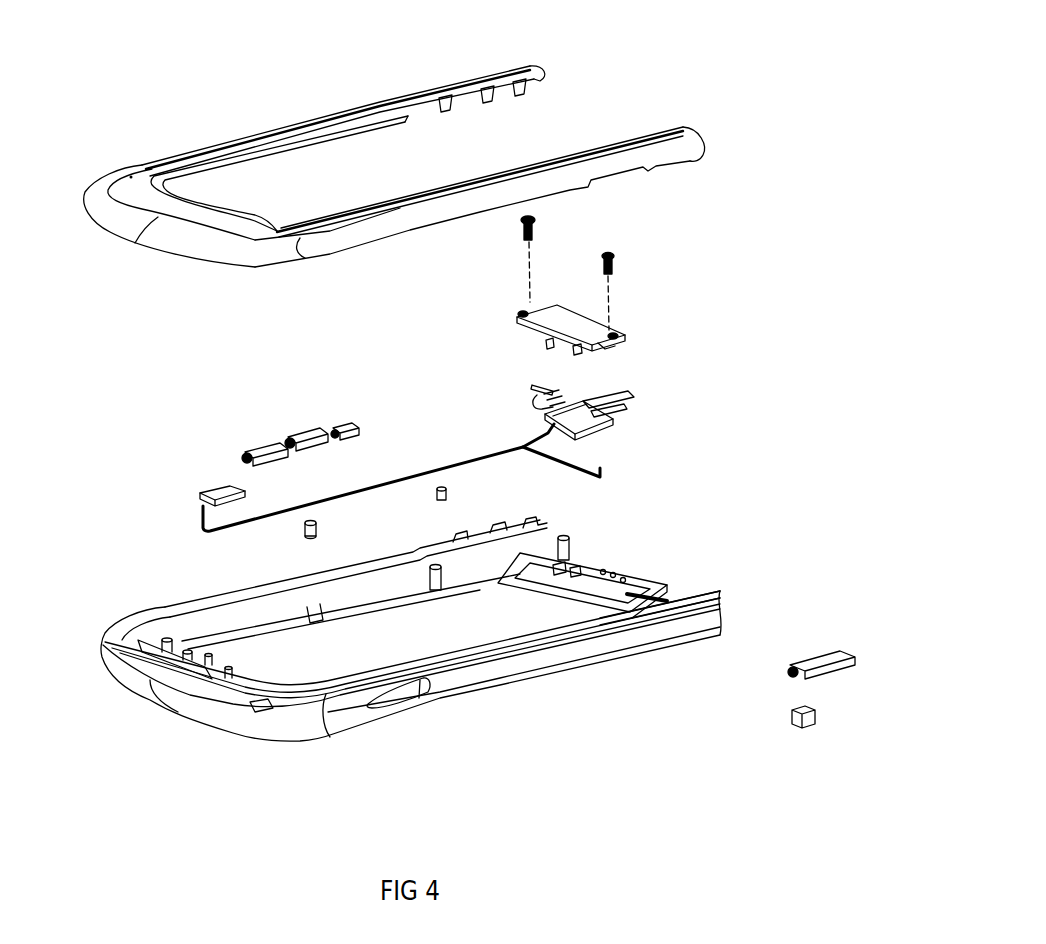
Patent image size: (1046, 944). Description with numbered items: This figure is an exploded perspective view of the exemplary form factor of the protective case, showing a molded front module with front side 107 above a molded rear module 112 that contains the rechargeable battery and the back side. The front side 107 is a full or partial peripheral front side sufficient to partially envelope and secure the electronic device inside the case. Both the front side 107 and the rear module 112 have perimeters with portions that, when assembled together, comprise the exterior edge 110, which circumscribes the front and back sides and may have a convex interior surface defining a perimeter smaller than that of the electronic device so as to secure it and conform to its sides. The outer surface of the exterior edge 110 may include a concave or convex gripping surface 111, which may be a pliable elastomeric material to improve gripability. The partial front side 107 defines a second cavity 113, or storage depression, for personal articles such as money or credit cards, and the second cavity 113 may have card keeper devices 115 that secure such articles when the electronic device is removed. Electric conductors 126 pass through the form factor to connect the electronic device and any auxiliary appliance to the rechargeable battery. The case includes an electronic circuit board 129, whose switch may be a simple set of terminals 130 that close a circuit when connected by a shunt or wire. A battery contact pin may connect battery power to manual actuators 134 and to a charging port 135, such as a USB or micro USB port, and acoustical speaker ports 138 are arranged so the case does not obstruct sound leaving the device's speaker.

The front side 107 is at (131, 177).
The exterior edge portion 110 is at (440, 222).
The gripping surface 111 is at (543, 655).
The rear module 112 is at (391, 648).
The second cavity 113 is at (436, 642).
The card keeper devices 115 is at (300, 535).
The electric conductors 126 is at (476, 458).
The electronic circuit board 129 is at (610, 428).
The terminals 130 is at (637, 408).
The manual actuators 134 is at (360, 403).
The charging port 135 is at (217, 488).
The acoustical speaker ports 138 is at (162, 640).